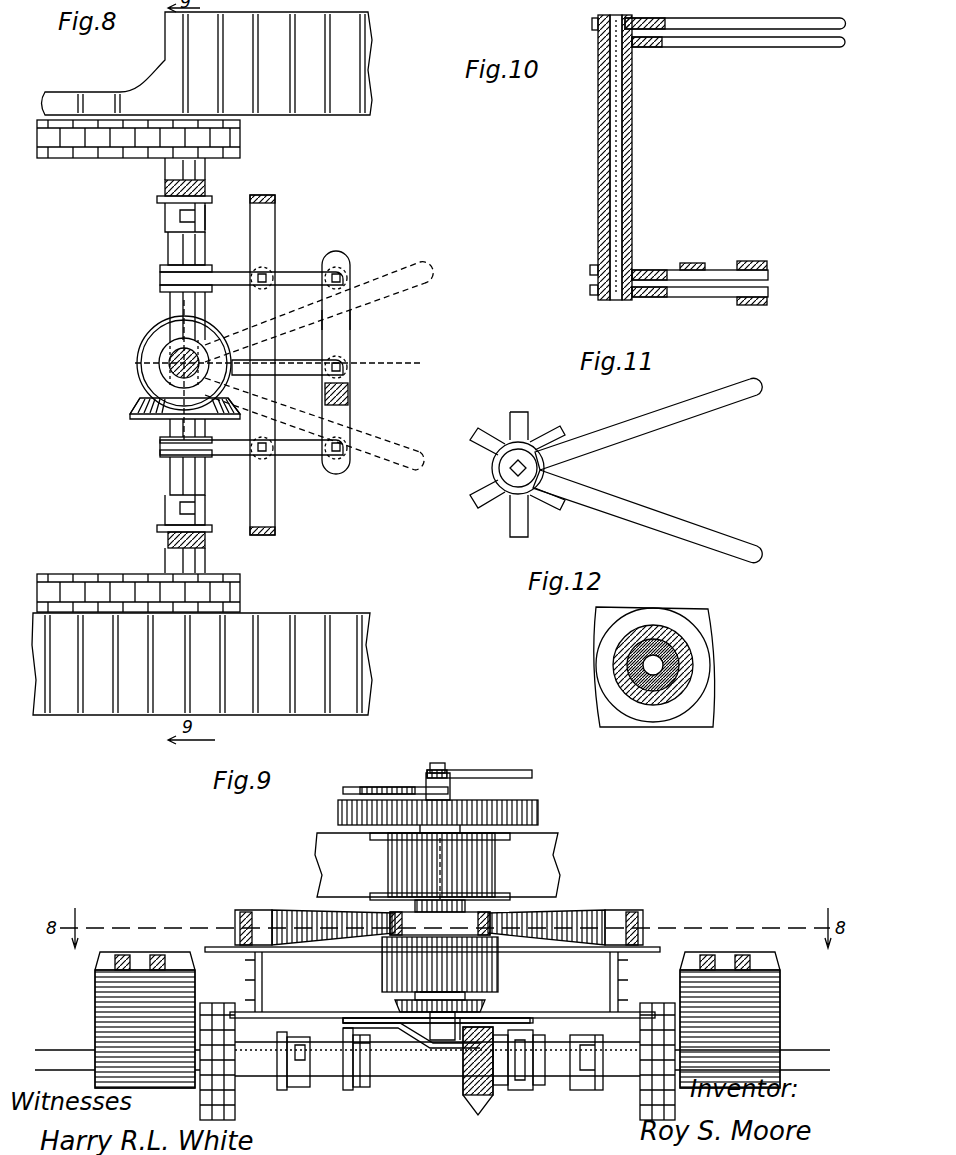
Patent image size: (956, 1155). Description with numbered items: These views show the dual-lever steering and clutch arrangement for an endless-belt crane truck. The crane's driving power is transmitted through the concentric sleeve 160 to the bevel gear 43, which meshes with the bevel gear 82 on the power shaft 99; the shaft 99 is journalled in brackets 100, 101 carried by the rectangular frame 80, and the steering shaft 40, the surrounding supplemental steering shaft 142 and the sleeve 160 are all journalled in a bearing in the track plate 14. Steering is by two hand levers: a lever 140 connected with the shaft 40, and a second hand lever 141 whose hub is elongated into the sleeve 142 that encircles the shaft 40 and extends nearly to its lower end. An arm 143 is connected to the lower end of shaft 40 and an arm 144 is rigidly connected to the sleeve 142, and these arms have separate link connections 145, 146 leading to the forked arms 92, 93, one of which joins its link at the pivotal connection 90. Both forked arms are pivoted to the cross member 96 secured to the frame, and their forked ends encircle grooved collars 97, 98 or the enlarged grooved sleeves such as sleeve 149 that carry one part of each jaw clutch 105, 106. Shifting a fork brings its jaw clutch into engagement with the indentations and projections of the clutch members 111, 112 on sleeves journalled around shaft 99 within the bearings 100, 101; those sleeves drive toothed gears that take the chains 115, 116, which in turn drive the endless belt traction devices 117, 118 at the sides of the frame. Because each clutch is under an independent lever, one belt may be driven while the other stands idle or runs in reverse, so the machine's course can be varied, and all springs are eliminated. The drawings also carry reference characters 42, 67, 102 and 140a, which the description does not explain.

In FIG. 12, the track plate 14 is at (618, 720).
In FIG. 9, the track plate 14 is at (255, 905).
In FIG. 8, the steering shaft 40 is at (165, 380).
In FIG. 10, the steering shaft 40 is at (612, 118).
In FIG. 12, the steering shaft 40 is at (662, 672).
In FIG. 9, the steering shaft 40 is at (436, 763).
In FIG. 11, the spider / cross arms 42 is at (490, 505).
In FIG. 9, the spider / cross arms 42 is at (538, 812).
In FIG. 8, the bevel gear 43 is at (150, 322).
In FIG. 9, the bevel gear 43 is at (395, 1005).
In FIG. 9, the collar 67 is at (520, 1090).
In FIG. 9, the rectangular frame 80 is at (255, 968).
In FIG. 8, the bevel gear 82 is at (175, 422).
In FIG. 9, the bevel gear 82 is at (463, 1080).
In FIG. 10, the pivotal connection 90 is at (695, 263).
In FIG. 8, the forked arm 92 is at (300, 272).
In FIG. 9, the forked arm 92 is at (530, 1020).
In FIG. 8, the forked arm 93 is at (310, 455).
In FIG. 9, the forked arm 93 is at (350, 1092).
In FIG. 8, the cross member 96 is at (270, 235).
In FIG. 9, the cross member 96 is at (318, 1012).
In FIG. 8, the collar 97 is at (160, 286).
In FIG. 8, the collar 98 is at (160, 455).
In FIG. 9, the collar 98 is at (352, 1090).
In FIG. 8, the power shaft 99 is at (160, 440).
In FIG. 9, the power shaft 99 is at (420, 1048).
In FIG. 8, the bracket 100 is at (165, 190).
In FIG. 9, the bracket 100 is at (560, 958).
In FIG. 8, the bracket 101 is at (168, 540).
In FIG. 9, the bracket 101 is at (280, 965).
In FIG. 8, the collar 102 is at (212, 268).
In FIG. 8, the jaw clutch 105 is at (165, 222).
In FIG. 9, the jaw clutch 105 is at (560, 1095).
In FIG. 8, the jaw clutch 106 is at (165, 512).
In FIG. 9, the jaw clutch 106 is at (305, 1087).
In FIG. 8, the clutch member 111 is at (207, 215).
In FIG. 9, the clutch member 111 is at (590, 1090).
In FIG. 8, the clutch member 112 is at (212, 530).
In FIG. 9, the clutch member 112 is at (282, 1090).
In FIG. 8, the chain 115 is at (130, 142).
In FIG. 9, the chain 115 is at (665, 990).
In FIG. 8, the chain 116 is at (98, 595).
In FIG. 9, the chain 116 is at (235, 1100).
In FIG. 8, the endless belt traction device 117 is at (202, 645).
In FIG. 9, the endless belt traction device 117 is at (95, 985).
In FIG. 8, the endless belt traction device 118 is at (315, 108).
In FIG. 9, the endless belt traction device 118 is at (800, 945).
In FIG. 8, the lever 140 is at (405, 470).
In FIG. 10, the lever 140 is at (815, 30).
In FIG. 11, the lever 140 is at (700, 410).
In FIG. 9, the lever 140 is at (495, 760).
In FIG. 9, the spokes 140a is at (395, 920).
In FIG. 8, the second hand lever 141 is at (418, 255).
In FIG. 10, the second hand lever 141 is at (815, 48).
In FIG. 11, the second hand lever 141 is at (662, 520).
In FIG. 9, the second hand lever 141 is at (392, 787).
In FIG. 8, the sleeve 142 is at (160, 363).
In FIG. 10, the sleeve 142 is at (598, 180).
In FIG. 12, the sleeve 142 is at (660, 690).
In FIG. 9, the sleeve 142 is at (495, 868).
In FIG. 10, the arm 143 is at (655, 297).
In FIG. 9, the arm 143 is at (445, 1050).
In FIG. 8, the arm 144 is at (330, 350).
In FIG. 10, the arm 144 is at (658, 270).
In FIG. 9, the arm 144 is at (470, 1010).
In FIG. 8, the link connection 145 is at (348, 395).
In FIG. 10, the link connection 145 is at (767, 300).
In FIG. 9, the link connection 145 is at (385, 1028).
In FIG. 8, the link connection 146 is at (340, 330).
In FIG. 10, the link connection 146 is at (768, 250).
In FIG. 9, the link connection 146 is at (500, 1085).
In FIG. 8, the sleeve 149 is at (168, 248).
In FIG. 12, the concentric sleeve 160 is at (648, 718).